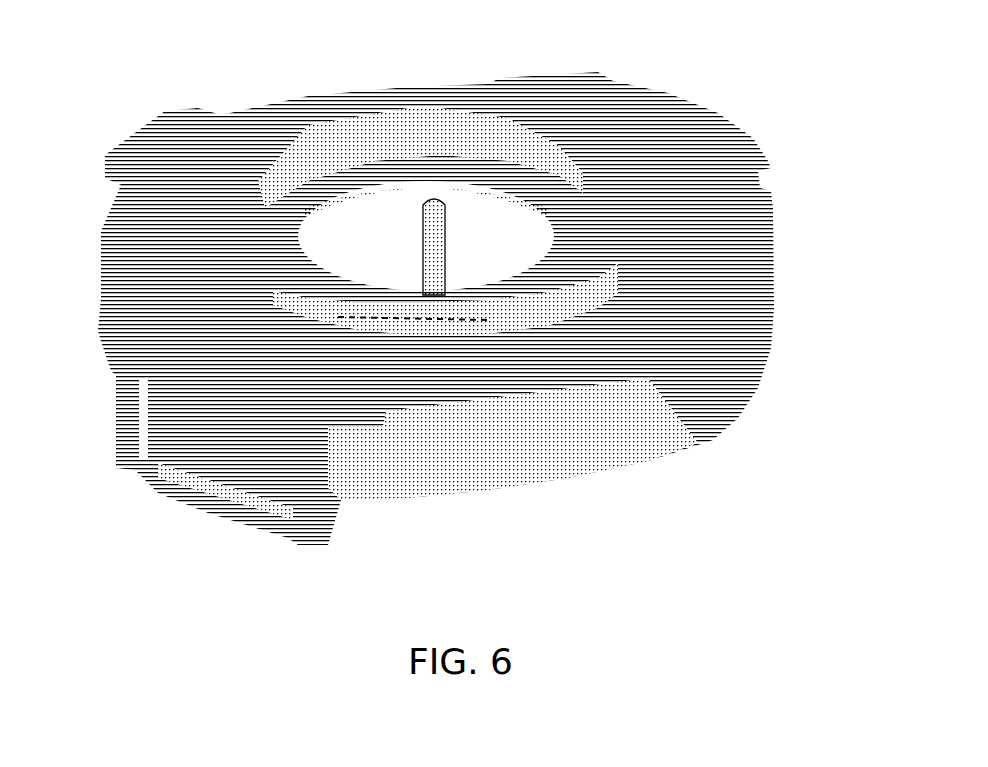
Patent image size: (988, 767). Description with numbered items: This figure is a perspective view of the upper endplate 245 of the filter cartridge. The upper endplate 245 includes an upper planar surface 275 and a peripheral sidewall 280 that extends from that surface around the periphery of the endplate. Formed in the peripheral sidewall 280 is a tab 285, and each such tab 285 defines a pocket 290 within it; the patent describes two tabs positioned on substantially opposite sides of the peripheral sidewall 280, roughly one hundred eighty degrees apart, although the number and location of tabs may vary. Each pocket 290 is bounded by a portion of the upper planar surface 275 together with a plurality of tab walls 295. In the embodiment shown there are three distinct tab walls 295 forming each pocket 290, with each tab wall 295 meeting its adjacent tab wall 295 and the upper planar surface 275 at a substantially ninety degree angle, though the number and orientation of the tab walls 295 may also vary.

The upper endplate 245 is at (743, 247).
The upper planar surface 275 is at (647, 140).
The peripheral sidewall 280 is at (598, 449).
The tab 285 is at (290, 467).
The pocket 290 is at (157, 443).
The tab wall 295 is at (123, 412).